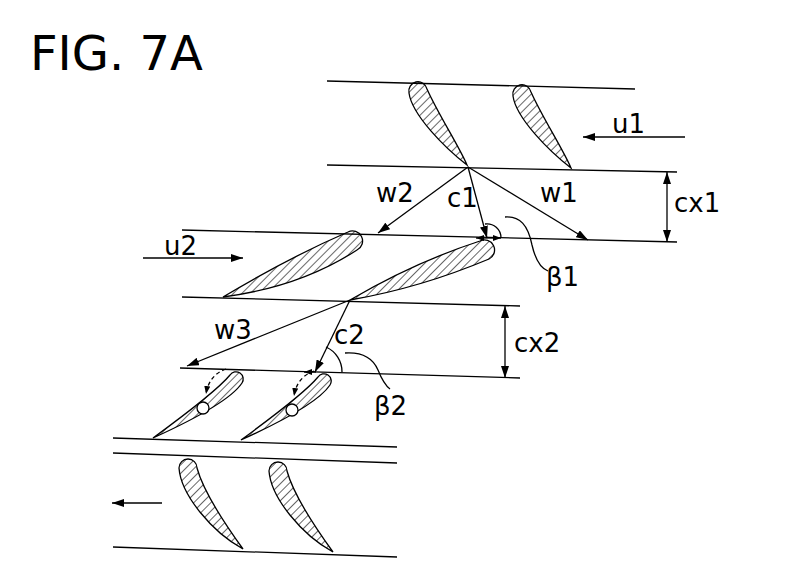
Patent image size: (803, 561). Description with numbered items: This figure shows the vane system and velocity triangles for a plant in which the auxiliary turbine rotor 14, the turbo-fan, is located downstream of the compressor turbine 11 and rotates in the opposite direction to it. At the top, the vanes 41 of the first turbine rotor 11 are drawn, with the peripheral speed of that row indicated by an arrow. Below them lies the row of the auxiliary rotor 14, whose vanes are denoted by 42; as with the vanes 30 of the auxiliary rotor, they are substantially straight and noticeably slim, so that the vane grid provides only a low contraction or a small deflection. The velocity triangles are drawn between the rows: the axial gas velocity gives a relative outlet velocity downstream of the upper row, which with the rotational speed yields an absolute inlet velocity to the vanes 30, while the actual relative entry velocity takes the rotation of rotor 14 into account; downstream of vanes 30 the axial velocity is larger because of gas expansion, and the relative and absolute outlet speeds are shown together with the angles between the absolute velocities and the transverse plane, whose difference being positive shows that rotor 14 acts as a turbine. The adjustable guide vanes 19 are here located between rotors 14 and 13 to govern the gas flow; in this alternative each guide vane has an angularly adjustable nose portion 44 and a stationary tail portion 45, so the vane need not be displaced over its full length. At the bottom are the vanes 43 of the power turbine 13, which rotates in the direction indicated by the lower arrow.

The first turbine rotor 11 is at (366, 141).
The stator vane 41 is at (430, 102).
The third auxiliary rotor 14 is at (633, 293).
The vanes of the auxiliary rotor 42 is at (257, 273).
The vanes of auxiliary rotor 30 is at (448, 264).
The adjustable guide vanes 19 is at (467, 431).
The angularly adjustable nose portion 44 is at (207, 388).
The stationary tail portion 45 is at (177, 420).
The second turbine rotor 13 is at (410, 520).
The vanes of the power turbine 43 is at (287, 480).